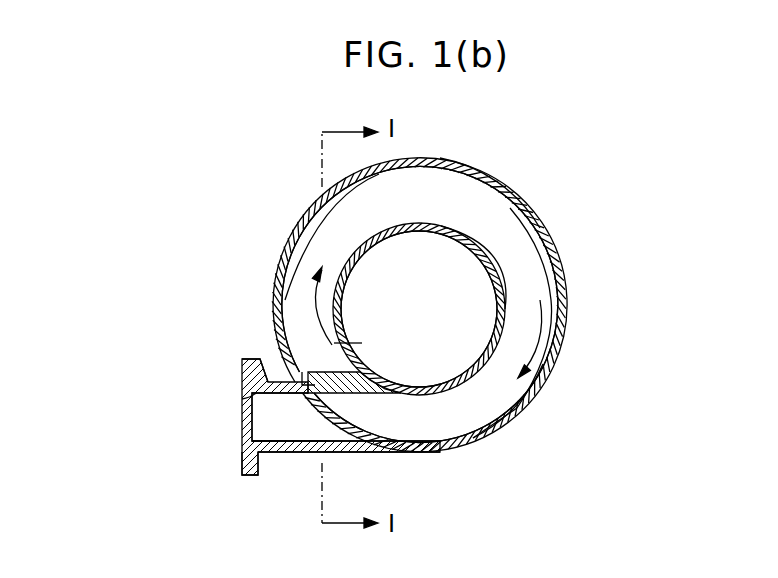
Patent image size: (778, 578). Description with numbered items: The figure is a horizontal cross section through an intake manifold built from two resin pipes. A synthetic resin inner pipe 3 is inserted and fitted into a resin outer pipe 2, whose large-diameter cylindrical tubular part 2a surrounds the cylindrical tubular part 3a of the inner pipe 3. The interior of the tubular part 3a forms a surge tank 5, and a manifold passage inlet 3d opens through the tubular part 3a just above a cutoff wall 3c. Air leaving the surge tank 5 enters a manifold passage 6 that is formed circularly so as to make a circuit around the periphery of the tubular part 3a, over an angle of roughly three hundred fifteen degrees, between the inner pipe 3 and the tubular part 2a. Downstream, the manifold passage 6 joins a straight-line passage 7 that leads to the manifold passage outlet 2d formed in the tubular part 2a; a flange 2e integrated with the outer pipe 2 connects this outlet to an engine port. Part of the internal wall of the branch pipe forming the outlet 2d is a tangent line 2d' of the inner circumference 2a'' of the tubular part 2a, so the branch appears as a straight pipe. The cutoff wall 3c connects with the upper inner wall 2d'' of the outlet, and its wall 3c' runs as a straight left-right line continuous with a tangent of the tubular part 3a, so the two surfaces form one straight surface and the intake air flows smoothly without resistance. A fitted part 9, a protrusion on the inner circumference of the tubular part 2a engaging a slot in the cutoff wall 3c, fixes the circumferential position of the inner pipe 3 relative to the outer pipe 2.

The outer pipe 2 is at (449, 160).
The cylindrical tubular part 2a is at (490, 170).
The inner circumference 2a'' is at (505, 423).
The inner pipe 3 is at (488, 248).
The cylindrical tubular part 3a is at (480, 250).
The cutoff wall 3c is at (346, 445).
The wall of the cutoff wall 3c' is at (379, 396).
The manifold passage inlet 3d is at (344, 329).
The surge tank 5 is at (430, 306).
The manifold passage 6 is at (429, 207).
The straight-line passage 7 is at (291, 428).
The fitted part 9 is at (314, 371).
The manifold passage outlet 2d is at (302, 418).
The tangent line 2d' is at (280, 466).
The upper inner wall 2d'' is at (222, 389).
The flange 2e is at (249, 476).